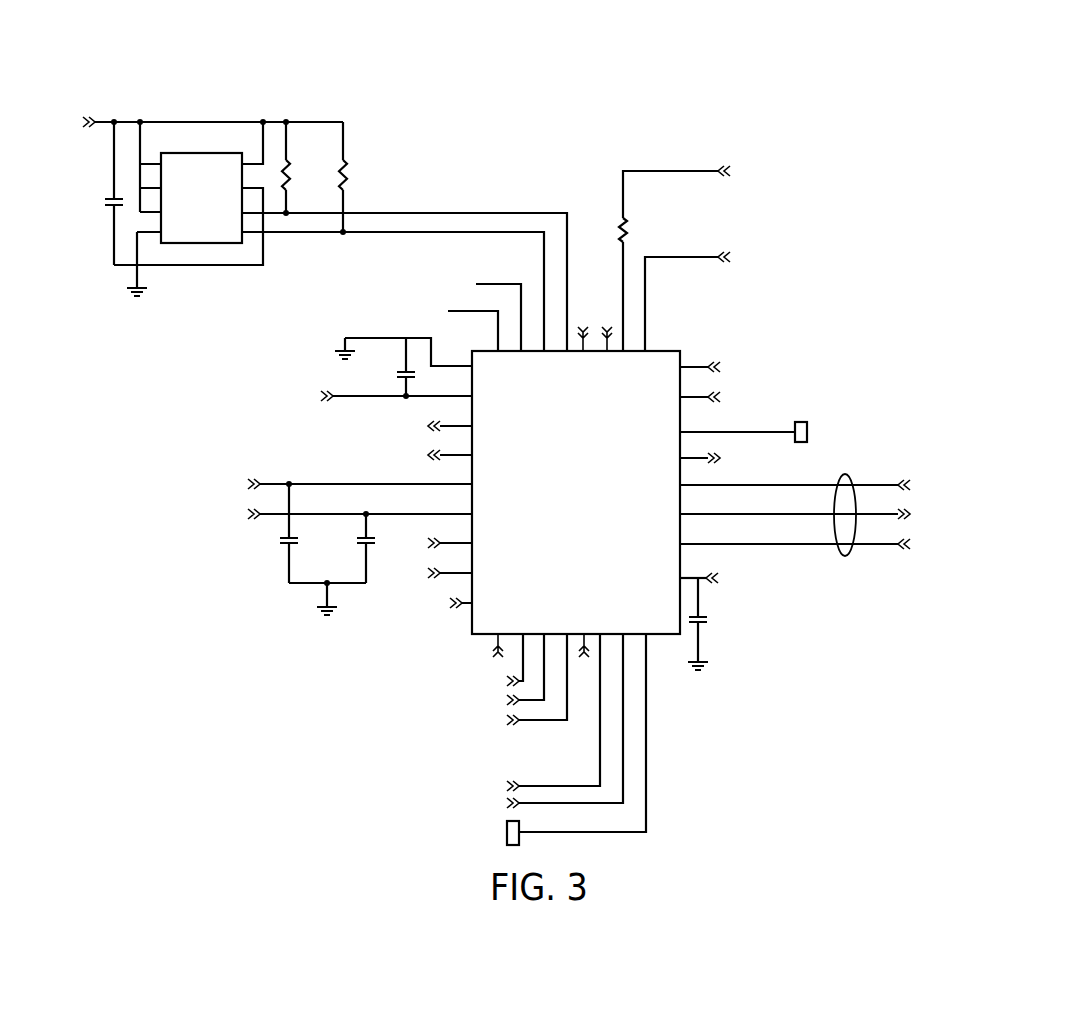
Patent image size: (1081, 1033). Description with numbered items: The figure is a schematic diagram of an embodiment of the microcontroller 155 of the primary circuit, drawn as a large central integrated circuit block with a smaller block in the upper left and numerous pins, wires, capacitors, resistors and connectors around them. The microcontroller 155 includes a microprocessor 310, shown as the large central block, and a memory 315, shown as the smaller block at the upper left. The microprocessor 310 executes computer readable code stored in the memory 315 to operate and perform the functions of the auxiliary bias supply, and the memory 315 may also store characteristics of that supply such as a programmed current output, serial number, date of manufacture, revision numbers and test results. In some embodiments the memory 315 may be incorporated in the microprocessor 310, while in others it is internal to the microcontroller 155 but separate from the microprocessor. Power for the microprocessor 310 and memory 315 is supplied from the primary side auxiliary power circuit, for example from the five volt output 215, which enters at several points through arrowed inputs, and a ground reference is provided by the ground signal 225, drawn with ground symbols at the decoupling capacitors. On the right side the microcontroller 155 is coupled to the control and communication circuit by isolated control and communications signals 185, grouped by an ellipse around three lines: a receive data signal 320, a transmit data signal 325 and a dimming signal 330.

The microcontroller 155 is at (705, 88).
The microprocessor 310 is at (598, 513).
The memory 315 is at (222, 210).
The 5 volt output 215 is at (84, 122).
The ground signal 225 is at (140, 281).
The isolated control and communications signals 185 is at (848, 472).
The receive data signal 320 is at (913, 486).
The transmit data signal 325 is at (913, 515).
The dimming signal 330 is at (913, 545).